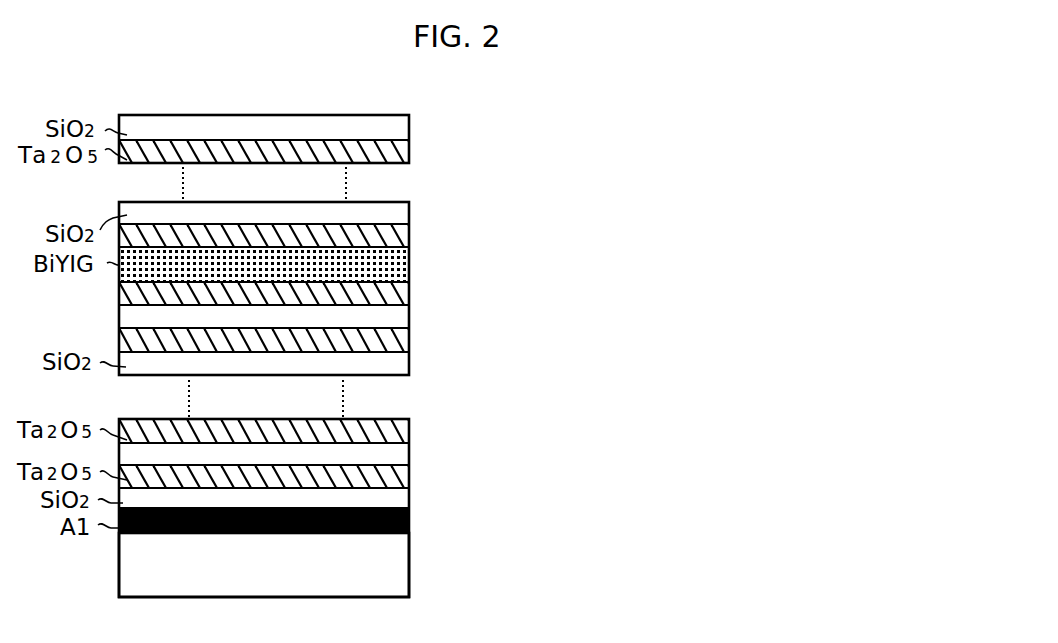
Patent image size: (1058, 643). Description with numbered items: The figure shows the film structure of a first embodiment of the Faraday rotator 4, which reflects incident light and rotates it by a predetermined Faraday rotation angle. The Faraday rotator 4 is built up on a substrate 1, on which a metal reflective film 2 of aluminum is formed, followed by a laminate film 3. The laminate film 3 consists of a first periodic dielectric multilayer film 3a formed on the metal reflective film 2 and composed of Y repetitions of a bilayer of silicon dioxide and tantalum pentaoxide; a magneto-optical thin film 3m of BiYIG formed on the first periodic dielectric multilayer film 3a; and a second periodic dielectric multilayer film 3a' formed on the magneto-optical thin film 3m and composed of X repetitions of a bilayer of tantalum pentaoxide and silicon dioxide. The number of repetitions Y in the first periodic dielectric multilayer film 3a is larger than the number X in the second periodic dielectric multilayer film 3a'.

The substrate 1 is at (397, 577).
The metal reflective film 2 is at (409, 527).
The laminate film 3 is at (502, 311).
The first periodic dielectric multilayer film 3a is at (449, 355).
The second periodic dielectric multilayer film 3a' is at (463, 181).
The magneto-optical thin film 3m is at (409, 263).
The Faraday rotator 4 is at (526, 326).